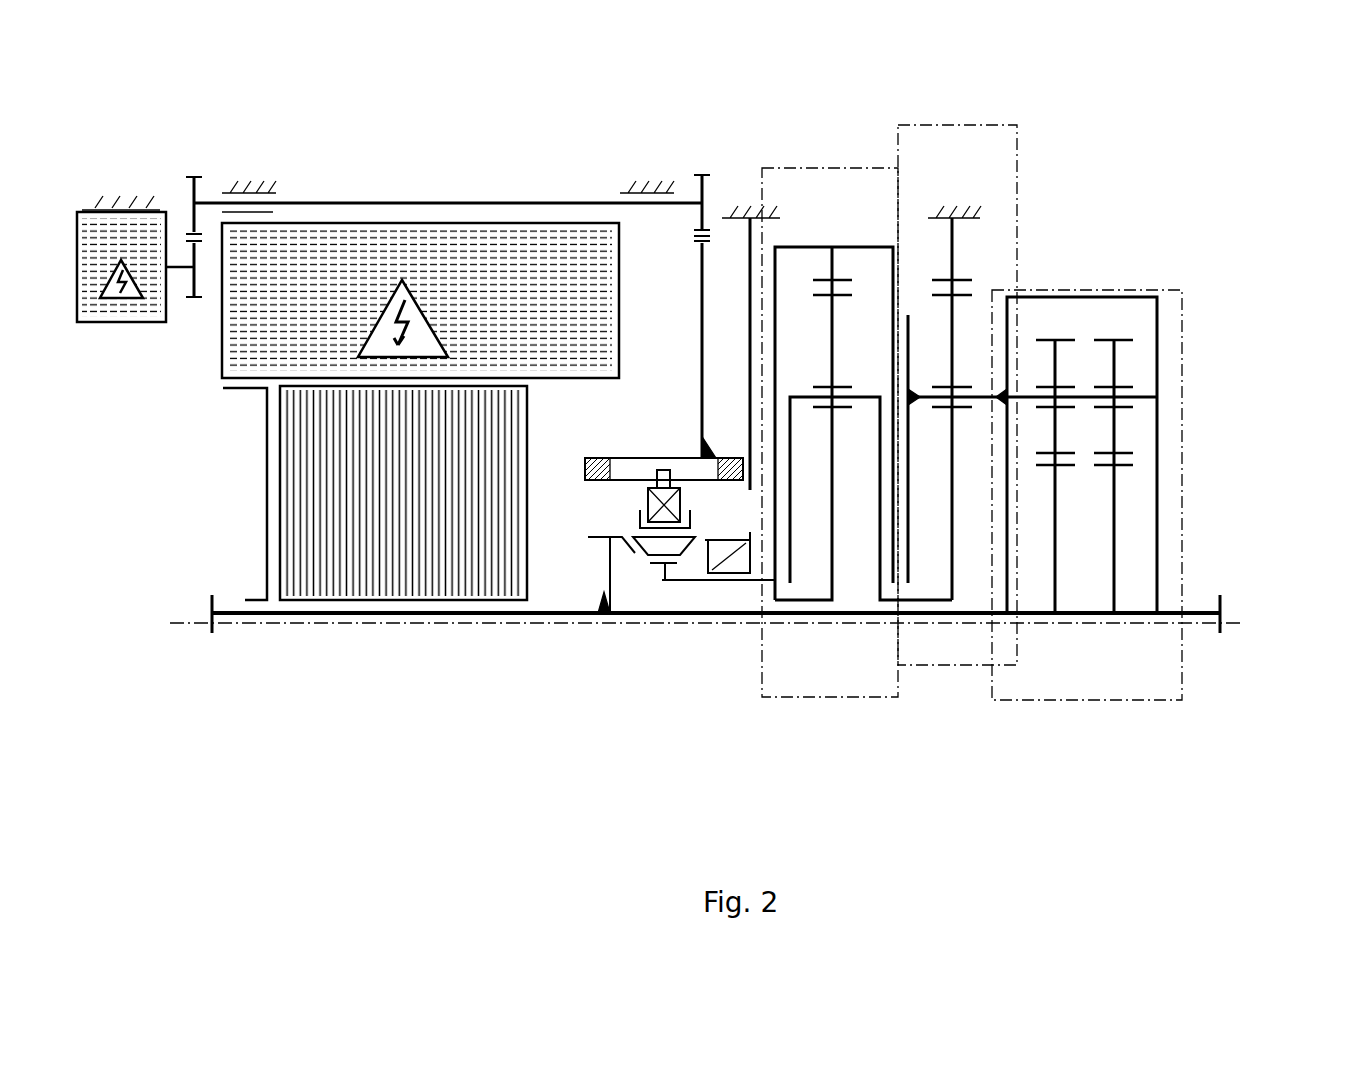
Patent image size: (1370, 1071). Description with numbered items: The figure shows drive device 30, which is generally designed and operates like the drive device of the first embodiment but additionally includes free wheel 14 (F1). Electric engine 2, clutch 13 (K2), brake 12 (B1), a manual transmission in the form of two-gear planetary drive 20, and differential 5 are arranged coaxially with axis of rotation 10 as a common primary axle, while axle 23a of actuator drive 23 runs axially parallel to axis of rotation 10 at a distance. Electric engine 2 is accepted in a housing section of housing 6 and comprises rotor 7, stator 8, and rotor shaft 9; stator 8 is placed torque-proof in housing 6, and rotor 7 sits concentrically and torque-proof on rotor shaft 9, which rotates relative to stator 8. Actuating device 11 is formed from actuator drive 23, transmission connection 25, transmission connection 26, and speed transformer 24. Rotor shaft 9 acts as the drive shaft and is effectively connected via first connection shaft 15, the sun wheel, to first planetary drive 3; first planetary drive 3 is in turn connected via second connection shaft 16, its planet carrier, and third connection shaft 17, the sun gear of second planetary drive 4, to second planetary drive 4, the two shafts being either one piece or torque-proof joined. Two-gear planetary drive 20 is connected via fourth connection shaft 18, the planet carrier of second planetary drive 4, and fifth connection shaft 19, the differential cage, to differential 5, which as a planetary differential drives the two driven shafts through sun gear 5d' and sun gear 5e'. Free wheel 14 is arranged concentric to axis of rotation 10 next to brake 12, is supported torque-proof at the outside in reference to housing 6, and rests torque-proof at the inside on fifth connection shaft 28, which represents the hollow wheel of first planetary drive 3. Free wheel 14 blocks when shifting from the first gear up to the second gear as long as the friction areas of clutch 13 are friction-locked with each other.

The electric engine 2 is at (402, 252).
The first planetary drive 3 is at (766, 205).
The second planetary drive 4 is at (902, 123).
The differential 5 is at (1183, 297).
The housing 6 is at (252, 185).
The rotor 7 is at (320, 505).
The stator 8 is at (255, 348).
The rotor shaft 9 is at (431, 625).
The axis of rotation 10 is at (177, 625).
The actuating device 11 is at (522, 178).
The brake 12 is at (699, 548).
The clutch 13 is at (630, 557).
The free wheel 14 is at (722, 540).
The first connection shaft 15 is at (812, 603).
The second connection shaft 16 is at (876, 580).
The third connection shaft 17 is at (953, 580).
The fourth connection shaft 18 is at (1010, 515).
The fifth connection shaft 19 is at (1158, 440).
The two-gear planetary drive 20 is at (960, 113).
The actuator drive 23 is at (121, 323).
The axle of the actuator drive 23a is at (184, 290).
The speed transformer 24 is at (660, 460).
The transmission connection 25 is at (708, 236).
The transmission connection 26 is at (190, 218).
The fifth connection shaft 28 is at (734, 587).
The drive device 30 is at (1202, 131).
The sun gear 5d' is at (1109, 677).
The sun gear 5e' is at (1203, 573).
The clutch K2 is at (634, 550).
The brake B1 is at (746, 513).
The free wheel F1 is at (777, 567).